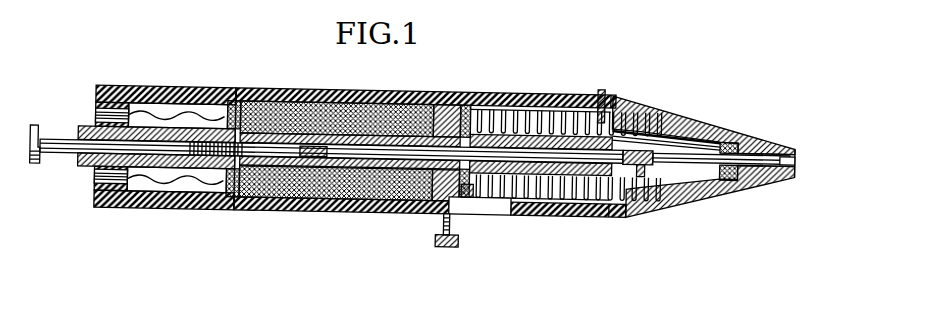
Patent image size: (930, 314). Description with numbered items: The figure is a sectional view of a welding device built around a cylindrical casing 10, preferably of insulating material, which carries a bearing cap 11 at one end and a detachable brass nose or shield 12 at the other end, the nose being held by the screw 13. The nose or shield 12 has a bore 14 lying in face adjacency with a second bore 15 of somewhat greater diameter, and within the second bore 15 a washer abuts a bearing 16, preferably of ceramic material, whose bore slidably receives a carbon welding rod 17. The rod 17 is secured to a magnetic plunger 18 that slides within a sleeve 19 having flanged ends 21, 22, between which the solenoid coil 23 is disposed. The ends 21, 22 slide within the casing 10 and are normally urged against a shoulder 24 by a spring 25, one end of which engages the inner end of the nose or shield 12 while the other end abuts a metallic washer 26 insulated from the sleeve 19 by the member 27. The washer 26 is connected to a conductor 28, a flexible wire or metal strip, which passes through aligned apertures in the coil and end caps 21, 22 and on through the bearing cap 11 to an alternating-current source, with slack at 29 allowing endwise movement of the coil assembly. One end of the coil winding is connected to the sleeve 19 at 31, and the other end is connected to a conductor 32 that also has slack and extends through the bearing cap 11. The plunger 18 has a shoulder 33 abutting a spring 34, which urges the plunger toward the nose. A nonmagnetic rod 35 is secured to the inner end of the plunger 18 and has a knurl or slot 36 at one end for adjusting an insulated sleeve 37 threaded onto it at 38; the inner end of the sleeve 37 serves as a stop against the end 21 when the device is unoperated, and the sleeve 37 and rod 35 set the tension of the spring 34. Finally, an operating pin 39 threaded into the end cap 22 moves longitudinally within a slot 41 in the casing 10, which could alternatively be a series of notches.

The cylindrical casing 10 is at (498, 92).
The bearing cap 11 is at (95, 203).
The nose or shield 12 is at (672, 206).
The screw 13 is at (603, 92).
The bore 14 is at (773, 172).
The second bore 15 is at (732, 182).
The bearing 16 is at (733, 142).
The carbon welding rod 17 is at (757, 155).
The magnetic plunger 18 is at (636, 200).
The sleeve 19 is at (387, 210).
The flanged end 21 is at (240, 86).
The flanged end 22 is at (447, 90).
The solenoid coil 23 is at (333, 210).
The shoulder 24 is at (229, 210).
The spring 25 is at (548, 198).
The metallic washer 26 is at (468, 196).
The member 27 is at (462, 90).
The conductor 28 is at (95, 180).
The slack 29 is at (180, 178).
The connection of coil winding to sleeve 31 is at (272, 90).
The conductor 32 is at (95, 110).
The shoulder 33 is at (643, 140).
The spring 34 is at (585, 200).
The nonmagnetic rod 35 is at (266, 160).
The knurl or slot 36 is at (37, 160).
The insulated sleeve 37 is at (83, 128).
The threaded connection 38 is at (190, 86).
The operating pin 39 is at (447, 246).
The slot 41 is at (500, 210).